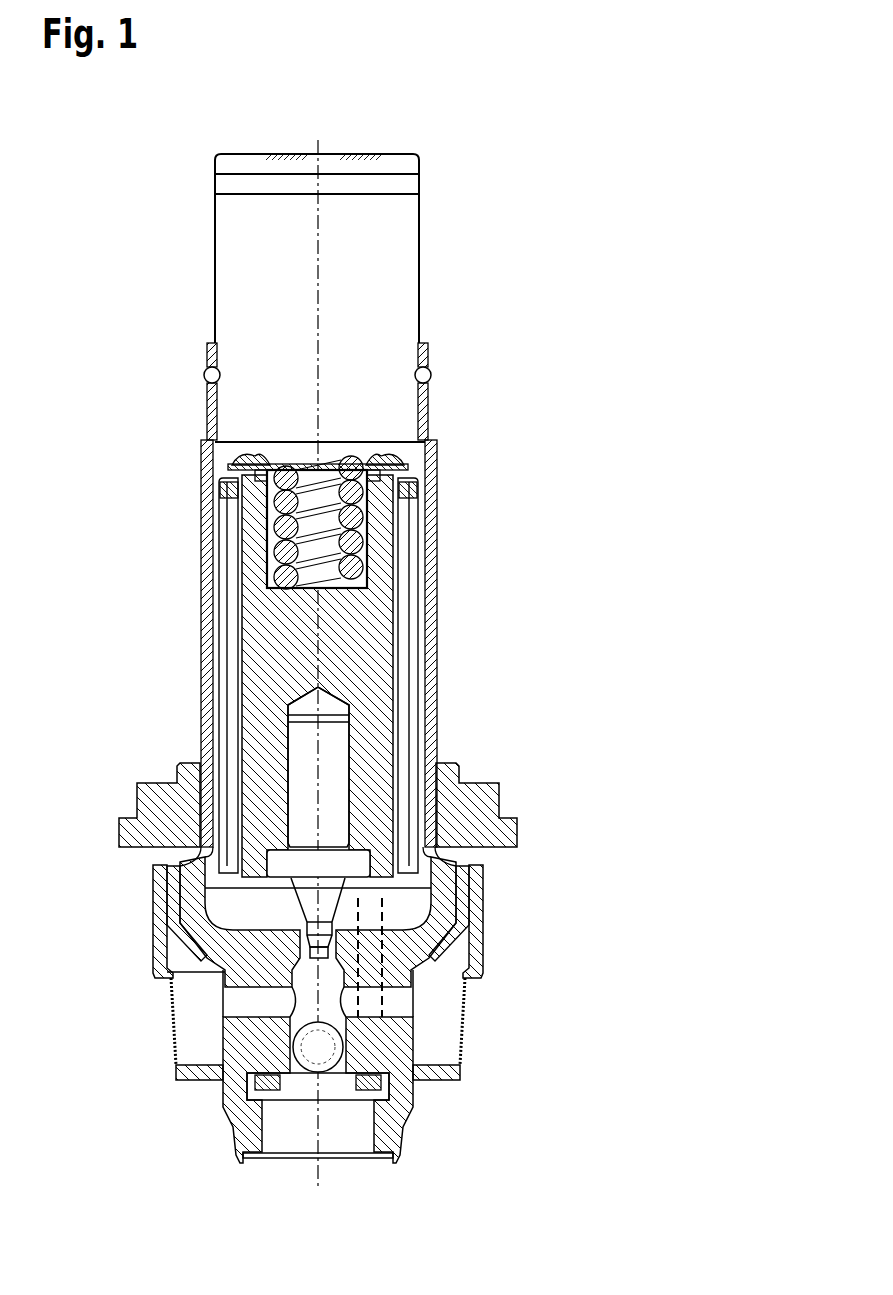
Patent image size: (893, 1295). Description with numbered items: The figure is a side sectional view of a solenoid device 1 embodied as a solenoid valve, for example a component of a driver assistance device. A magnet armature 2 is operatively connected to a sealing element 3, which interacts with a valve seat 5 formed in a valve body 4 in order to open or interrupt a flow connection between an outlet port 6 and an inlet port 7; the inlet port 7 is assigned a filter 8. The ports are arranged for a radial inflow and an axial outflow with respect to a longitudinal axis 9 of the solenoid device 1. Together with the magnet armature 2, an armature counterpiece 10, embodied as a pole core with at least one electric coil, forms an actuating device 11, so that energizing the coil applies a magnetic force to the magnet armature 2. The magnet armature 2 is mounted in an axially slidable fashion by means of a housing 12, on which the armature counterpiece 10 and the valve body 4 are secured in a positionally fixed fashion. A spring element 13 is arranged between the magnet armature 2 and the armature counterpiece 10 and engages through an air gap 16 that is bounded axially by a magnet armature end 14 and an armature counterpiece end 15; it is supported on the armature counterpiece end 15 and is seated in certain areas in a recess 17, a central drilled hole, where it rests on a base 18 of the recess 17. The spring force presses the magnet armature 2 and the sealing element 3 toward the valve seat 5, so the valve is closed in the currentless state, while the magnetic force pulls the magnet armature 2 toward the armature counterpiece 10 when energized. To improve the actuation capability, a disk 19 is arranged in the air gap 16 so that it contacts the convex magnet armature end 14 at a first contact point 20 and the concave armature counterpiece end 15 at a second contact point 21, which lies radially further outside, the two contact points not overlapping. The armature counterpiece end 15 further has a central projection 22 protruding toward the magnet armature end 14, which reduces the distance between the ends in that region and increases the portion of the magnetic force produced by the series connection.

The solenoid device 1 is at (503, 133).
The magnet armature 2 is at (357, 625).
The sealing element 3 is at (323, 900).
The valve body 4 is at (380, 987).
The valve seat 5 is at (345, 945).
The outlet port 6 is at (279, 1186).
The inlet port 7 is at (510, 1034).
The filter 8 is at (447, 1070).
The longitudinal axis 9 is at (318, 218).
The armature counterpiece 10 is at (380, 258).
The actuating device 11 is at (490, 356).
The housing 12 is at (430, 540).
The spring element 13 is at (398, 580).
The magnet armature end 14 is at (395, 471).
The armature counterpiece end 15 is at (240, 478).
The air gap 16 is at (256, 462).
The recess 17 is at (272, 520).
The base 18 is at (302, 578).
The disk 19 is at (400, 458).
The first contact point 20 is at (400, 497).
The second contact point 21 is at (228, 466).
The projection 22 is at (338, 448).